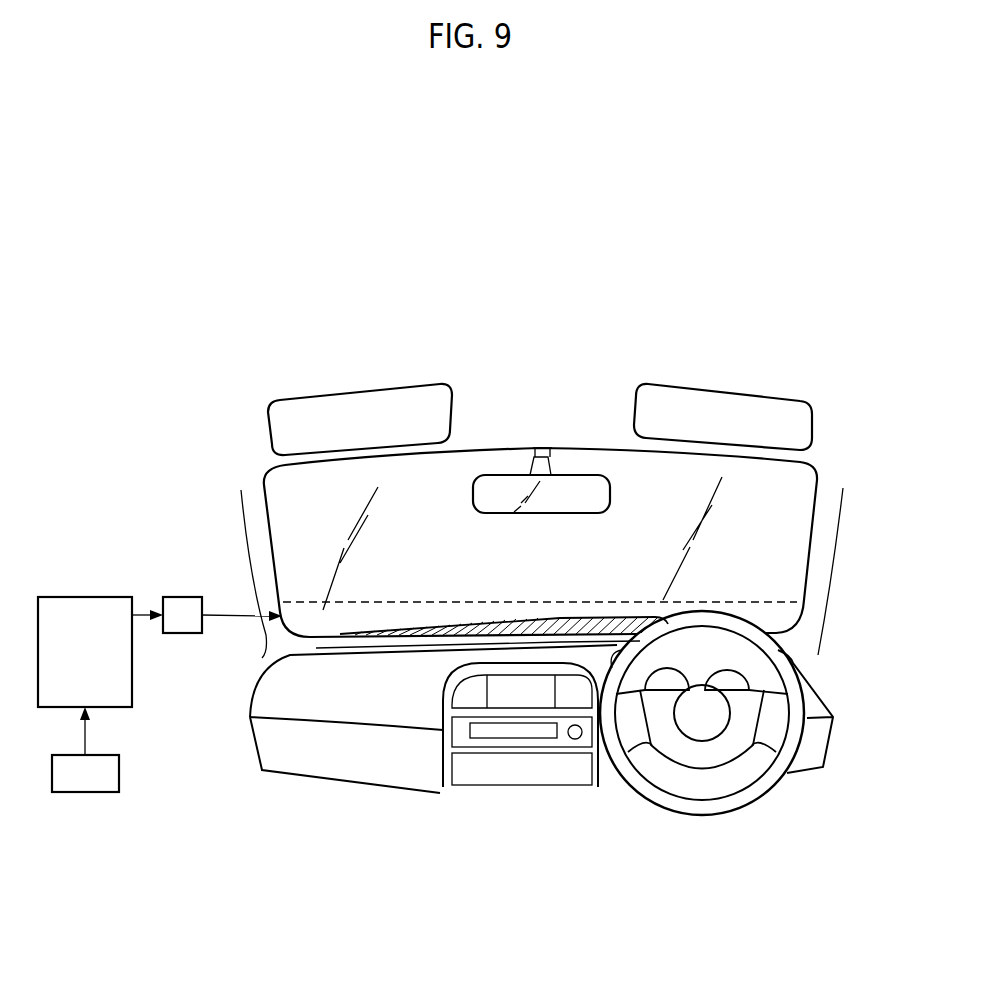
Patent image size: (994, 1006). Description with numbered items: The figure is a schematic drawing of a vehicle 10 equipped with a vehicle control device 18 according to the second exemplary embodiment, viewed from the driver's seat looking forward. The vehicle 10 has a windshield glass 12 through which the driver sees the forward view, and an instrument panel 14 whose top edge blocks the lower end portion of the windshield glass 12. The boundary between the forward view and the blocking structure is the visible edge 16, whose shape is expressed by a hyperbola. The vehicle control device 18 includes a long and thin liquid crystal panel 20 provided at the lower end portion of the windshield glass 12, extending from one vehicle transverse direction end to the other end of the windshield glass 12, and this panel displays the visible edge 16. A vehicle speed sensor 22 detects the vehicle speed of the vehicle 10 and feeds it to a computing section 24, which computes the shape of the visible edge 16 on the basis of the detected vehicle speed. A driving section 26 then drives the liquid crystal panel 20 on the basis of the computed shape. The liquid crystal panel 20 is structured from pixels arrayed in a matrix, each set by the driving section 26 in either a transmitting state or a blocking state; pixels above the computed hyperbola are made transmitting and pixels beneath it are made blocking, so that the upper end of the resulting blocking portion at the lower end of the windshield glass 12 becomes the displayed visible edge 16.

The vehicle 10 is at (716, 316).
The windshield glass 12 is at (778, 498).
The instrument panel 14 is at (268, 688).
The visible edge 16 is at (422, 622).
The vehicle control device 18 is at (155, 516).
The liquid crystal panel 20 is at (352, 618).
The vehicle speed sensor 22 is at (97, 785).
The computing section 24 is at (115, 697).
The driving section 26 is at (187, 627).